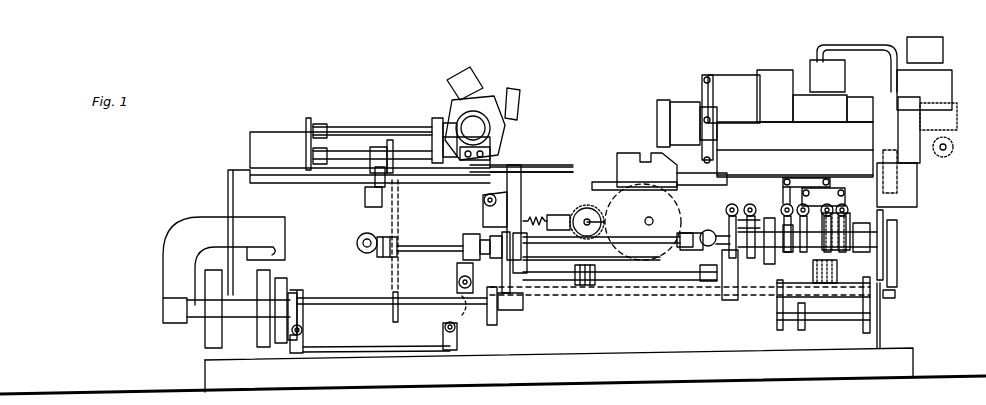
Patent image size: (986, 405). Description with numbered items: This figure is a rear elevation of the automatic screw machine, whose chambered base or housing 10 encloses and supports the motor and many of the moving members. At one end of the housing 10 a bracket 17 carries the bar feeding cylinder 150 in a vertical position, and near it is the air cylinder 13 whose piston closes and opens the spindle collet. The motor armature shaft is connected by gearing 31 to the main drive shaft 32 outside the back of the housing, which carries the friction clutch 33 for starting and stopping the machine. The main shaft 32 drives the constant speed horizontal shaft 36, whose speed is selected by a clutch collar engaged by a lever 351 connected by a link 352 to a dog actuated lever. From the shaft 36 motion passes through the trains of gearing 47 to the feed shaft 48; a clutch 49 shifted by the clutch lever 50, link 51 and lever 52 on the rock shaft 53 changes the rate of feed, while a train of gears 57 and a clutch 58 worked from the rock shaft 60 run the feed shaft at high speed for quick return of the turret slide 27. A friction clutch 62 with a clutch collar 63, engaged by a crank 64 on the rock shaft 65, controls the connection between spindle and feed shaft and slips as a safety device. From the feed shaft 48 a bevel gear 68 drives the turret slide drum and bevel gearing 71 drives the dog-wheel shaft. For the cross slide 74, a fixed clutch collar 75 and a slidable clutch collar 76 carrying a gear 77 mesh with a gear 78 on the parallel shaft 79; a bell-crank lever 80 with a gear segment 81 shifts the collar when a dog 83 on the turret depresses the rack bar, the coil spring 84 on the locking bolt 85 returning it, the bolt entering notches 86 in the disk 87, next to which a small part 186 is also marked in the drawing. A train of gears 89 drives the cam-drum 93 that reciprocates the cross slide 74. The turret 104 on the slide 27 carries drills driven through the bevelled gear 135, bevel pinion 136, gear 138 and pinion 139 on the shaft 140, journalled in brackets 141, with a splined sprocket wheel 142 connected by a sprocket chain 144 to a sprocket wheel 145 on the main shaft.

The base or housing 10 is at (250, 197).
The air cylinder 13 is at (777, 111).
The bracket 17 is at (928, 170).
The turret slide 27 is at (365, 172).
The gearing 31 is at (208, 341).
The main drive shaft 32 is at (347, 306).
The friction clutch 33 is at (283, 326).
The horizontal shaft 36 is at (892, 298).
The trains of gearing 47 is at (818, 290).
The feed shaft 48 is at (418, 247).
The clutch 49 is at (845, 298).
The clutch lever 50 is at (832, 200).
The link 51 is at (805, 200).
The lever 52 is at (786, 208).
The rock shaft 53 is at (781, 222).
The train of gears 57 is at (890, 243).
The clutch 58 is at (820, 240).
The rock shaft 60 is at (840, 204).
The friction clutch 62 is at (766, 250).
The clutch collar 63 is at (728, 238).
The crank 64 is at (749, 222).
The rock shaft 65 is at (734, 204).
The bevel gear 68 is at (368, 234).
The bevel gearing 71 is at (700, 232).
The cross slide 74 is at (648, 160).
The clutch collar 75 is at (470, 252).
The slidable clutch collar 76 is at (472, 234).
The gear 77 is at (513, 207).
The gear 78 is at (515, 306).
The shaft 79 is at (625, 278).
The bell-crank lever 80 is at (485, 217).
The gear segment 81 is at (492, 194).
The dog 83 is at (443, 150).
The coil spring 84 is at (538, 215).
The locking bolt 85 is at (563, 216).
The notches 86 is at (590, 205).
The disk 87 is at (600, 210).
The train of gears 89 is at (723, 284).
The cam-drum 93 is at (643, 222).
The turret 104 is at (505, 140).
The bevelled gear 135 is at (481, 103).
The bevel pinion 136 is at (452, 133).
The gear 138 is at (294, 134).
The pinion 139 is at (310, 156).
The shaft 140 is at (347, 152).
The brackets 141 is at (326, 124).
The sprocket wheel 142 is at (391, 140).
The sprocket chain 144 is at (393, 283).
The sprocket wheel 145 is at (397, 323).
The cylinder 150 is at (927, 100).
The pin 186 is at (634, 219).
The lever 351 is at (473, 300).
The link 352 is at (692, 252).